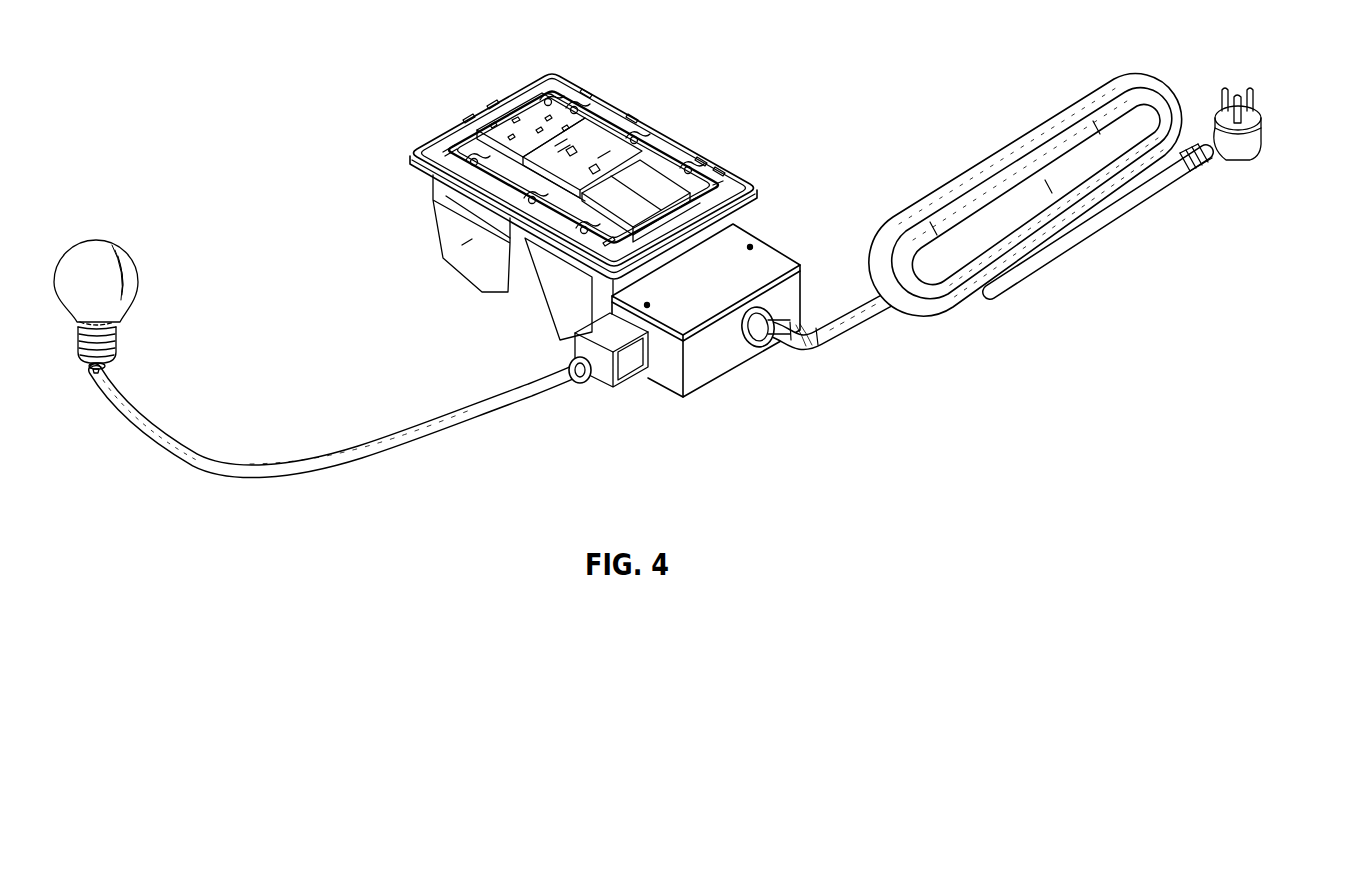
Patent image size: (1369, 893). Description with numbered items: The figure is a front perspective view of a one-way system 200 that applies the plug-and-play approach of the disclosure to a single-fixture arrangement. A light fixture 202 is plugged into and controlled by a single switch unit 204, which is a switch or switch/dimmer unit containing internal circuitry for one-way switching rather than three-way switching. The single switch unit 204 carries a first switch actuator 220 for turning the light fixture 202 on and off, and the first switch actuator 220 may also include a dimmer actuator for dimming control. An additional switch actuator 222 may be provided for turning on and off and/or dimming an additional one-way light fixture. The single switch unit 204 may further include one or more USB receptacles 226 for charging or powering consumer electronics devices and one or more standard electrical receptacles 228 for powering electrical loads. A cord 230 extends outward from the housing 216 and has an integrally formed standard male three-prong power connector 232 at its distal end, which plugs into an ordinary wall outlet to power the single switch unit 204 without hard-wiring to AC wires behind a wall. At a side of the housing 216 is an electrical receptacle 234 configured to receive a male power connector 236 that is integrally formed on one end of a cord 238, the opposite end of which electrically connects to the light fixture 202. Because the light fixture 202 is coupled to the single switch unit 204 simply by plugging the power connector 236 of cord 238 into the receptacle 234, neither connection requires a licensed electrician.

The one-way system 200 is at (202, 82).
The light fixture 202 is at (130, 283).
The single switch unit 204 is at (428, 130).
The housing 216 is at (476, 245).
The first switch actuator 220 is at (642, 172).
The additional switch actuator 222 is at (668, 197).
The USB receptacles 226 is at (592, 167).
The standard electrical receptacles 228 is at (528, 108).
The cord 230 is at (1044, 249).
The male 3-prong power connector 232 is at (1266, 130).
The electrical receptacle 234 is at (633, 368).
The male power connector 236 is at (598, 332).
The cord 238 is at (193, 466).